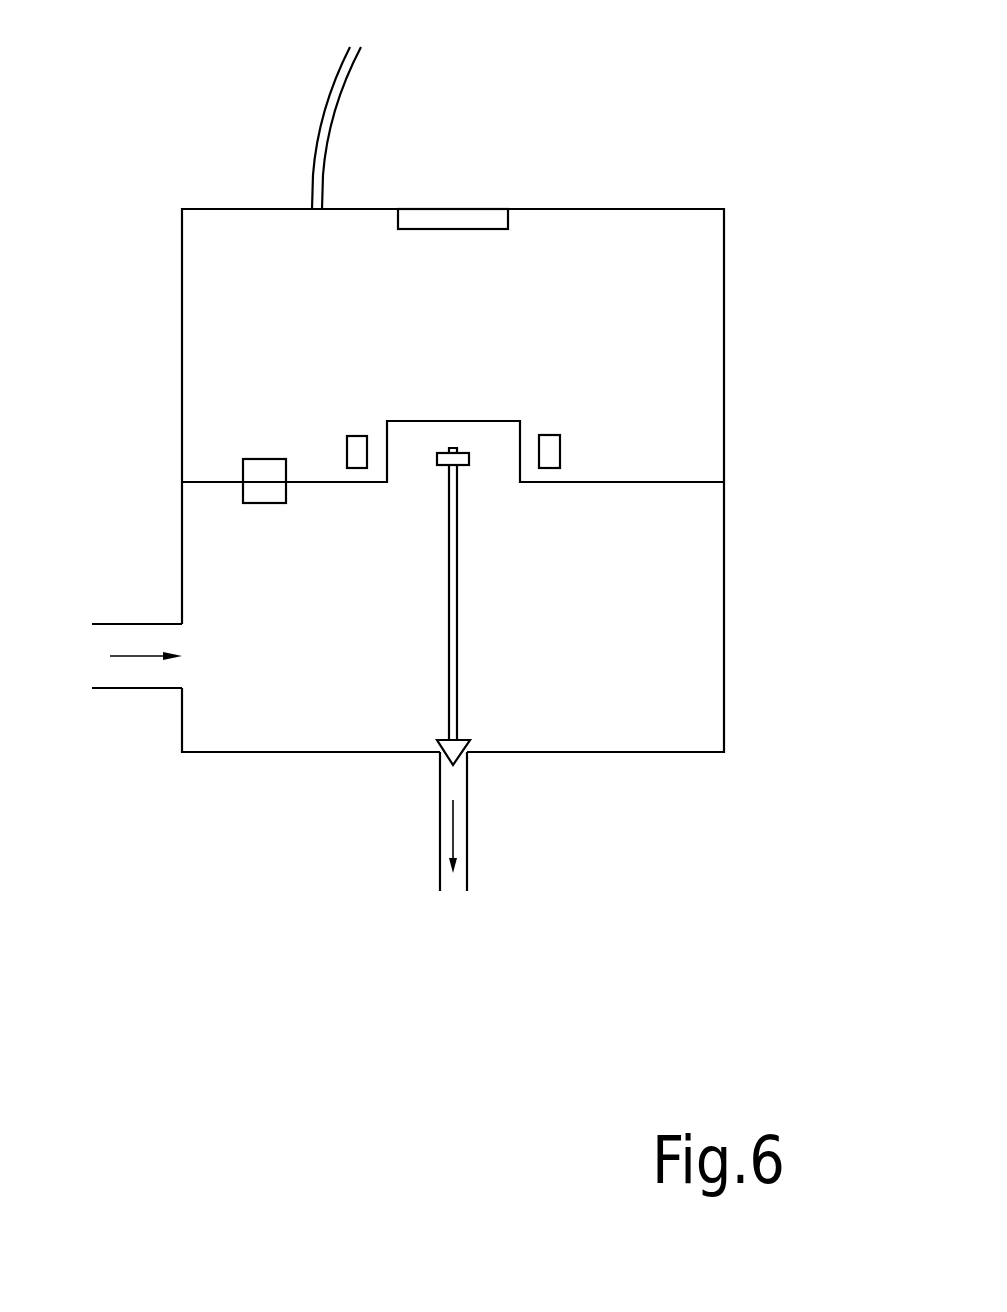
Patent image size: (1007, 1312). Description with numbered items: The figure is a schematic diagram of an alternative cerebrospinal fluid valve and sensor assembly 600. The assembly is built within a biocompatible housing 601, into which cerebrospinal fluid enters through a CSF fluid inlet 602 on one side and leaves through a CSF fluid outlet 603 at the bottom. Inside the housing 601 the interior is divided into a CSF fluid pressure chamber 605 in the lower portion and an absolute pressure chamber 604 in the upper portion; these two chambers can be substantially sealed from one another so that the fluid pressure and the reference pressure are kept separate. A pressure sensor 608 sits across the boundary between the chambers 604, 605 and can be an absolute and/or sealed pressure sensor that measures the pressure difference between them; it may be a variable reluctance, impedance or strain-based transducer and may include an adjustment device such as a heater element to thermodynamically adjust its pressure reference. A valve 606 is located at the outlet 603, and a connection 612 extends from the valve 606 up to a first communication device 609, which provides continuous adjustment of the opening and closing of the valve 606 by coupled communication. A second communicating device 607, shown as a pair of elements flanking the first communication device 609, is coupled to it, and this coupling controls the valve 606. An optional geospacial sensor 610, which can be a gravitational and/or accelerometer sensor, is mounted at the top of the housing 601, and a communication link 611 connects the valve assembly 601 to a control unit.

The valve and sensor assembly 600 is at (755, 134).
The biocompatible housing 601 is at (724, 286).
The CSF fluid inlet 602 is at (103, 669).
The CSF fluid outlet 603 is at (460, 885).
The absolute pressure chamber 604 is at (700, 434).
The CSF fluid pressure chamber 605 is at (698, 673).
The valve 606 is at (503, 702).
The second communicating device 607 is at (355, 452).
The pressure sensor 608 is at (263, 470).
The first communication device 609 is at (463, 463).
The geospacial sensor 610 is at (445, 218).
The communication link 611 is at (330, 88).
The connection 612 is at (450, 643).